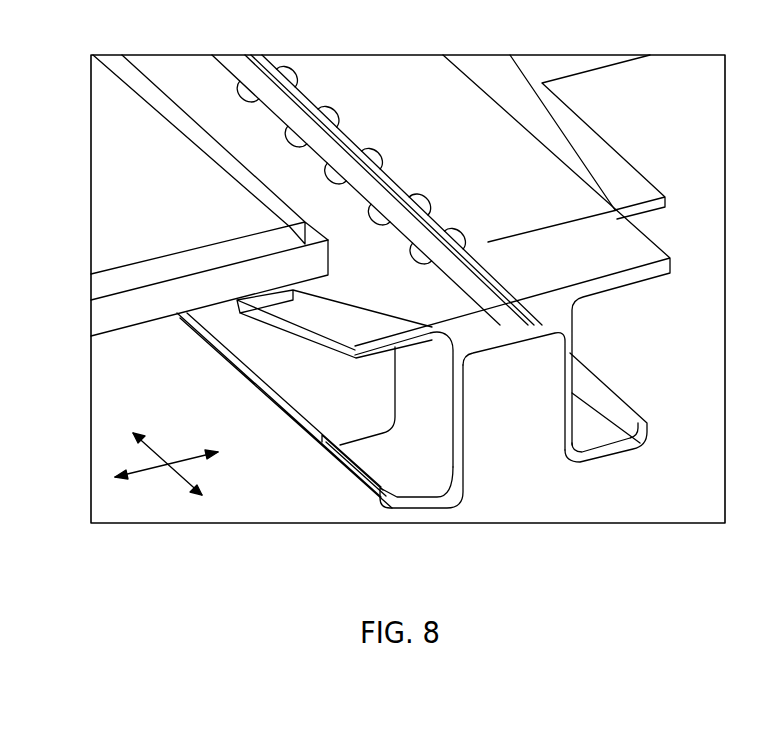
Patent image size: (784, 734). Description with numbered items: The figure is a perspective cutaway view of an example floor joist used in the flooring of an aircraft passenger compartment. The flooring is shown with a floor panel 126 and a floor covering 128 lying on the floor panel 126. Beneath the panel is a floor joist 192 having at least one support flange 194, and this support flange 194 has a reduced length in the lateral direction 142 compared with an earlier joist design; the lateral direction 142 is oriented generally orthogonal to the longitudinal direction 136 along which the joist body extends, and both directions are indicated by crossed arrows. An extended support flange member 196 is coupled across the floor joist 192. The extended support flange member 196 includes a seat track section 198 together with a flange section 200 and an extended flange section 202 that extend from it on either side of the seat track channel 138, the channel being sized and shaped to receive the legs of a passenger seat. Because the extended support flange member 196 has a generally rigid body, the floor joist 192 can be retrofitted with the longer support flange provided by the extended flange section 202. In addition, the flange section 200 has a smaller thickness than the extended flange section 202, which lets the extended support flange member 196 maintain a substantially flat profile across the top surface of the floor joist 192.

The floor panel 126 is at (90, 322).
The floor covering 128 is at (90, 291).
The longitudinal direction 136 is at (153, 447).
The lateral direction 142 is at (197, 458).
The seat track channel 138 is at (510, 307).
The floor joist 192 is at (463, 457).
The support flange 194 is at (630, 285).
The extended support flange member 196 is at (418, 72).
The seat track section 198 is at (460, 264).
The flange section 200 is at (461, 141).
The extended flange section 202 is at (574, 134).